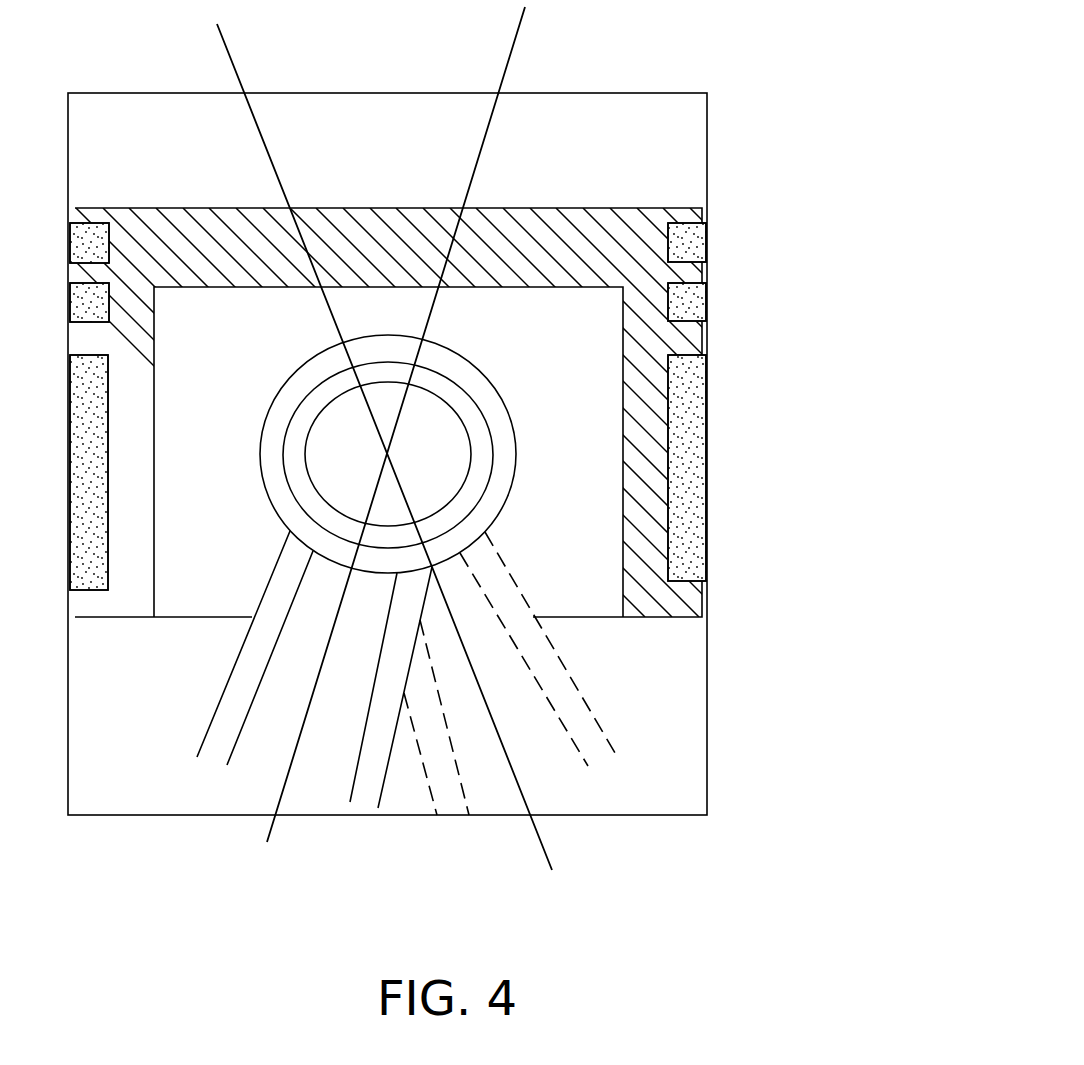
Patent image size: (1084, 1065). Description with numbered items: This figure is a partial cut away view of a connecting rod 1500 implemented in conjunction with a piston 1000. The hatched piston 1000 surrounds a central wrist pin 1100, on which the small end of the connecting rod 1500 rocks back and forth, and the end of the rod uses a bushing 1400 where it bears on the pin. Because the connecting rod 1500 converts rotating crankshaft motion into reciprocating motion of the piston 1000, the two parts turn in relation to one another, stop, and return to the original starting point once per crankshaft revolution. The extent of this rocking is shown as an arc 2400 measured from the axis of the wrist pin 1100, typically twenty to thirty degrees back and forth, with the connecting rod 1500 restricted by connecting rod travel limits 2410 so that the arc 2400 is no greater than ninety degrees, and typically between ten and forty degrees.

The piston 1000 is at (572, 313).
The wrist pin 1100 is at (492, 484).
The bushing 1400 is at (528, 503).
The connecting rod 1500 is at (342, 755).
The arc of motion 2400 is at (507, 43).
The connecting rod travel limits 2410 is at (318, 702).